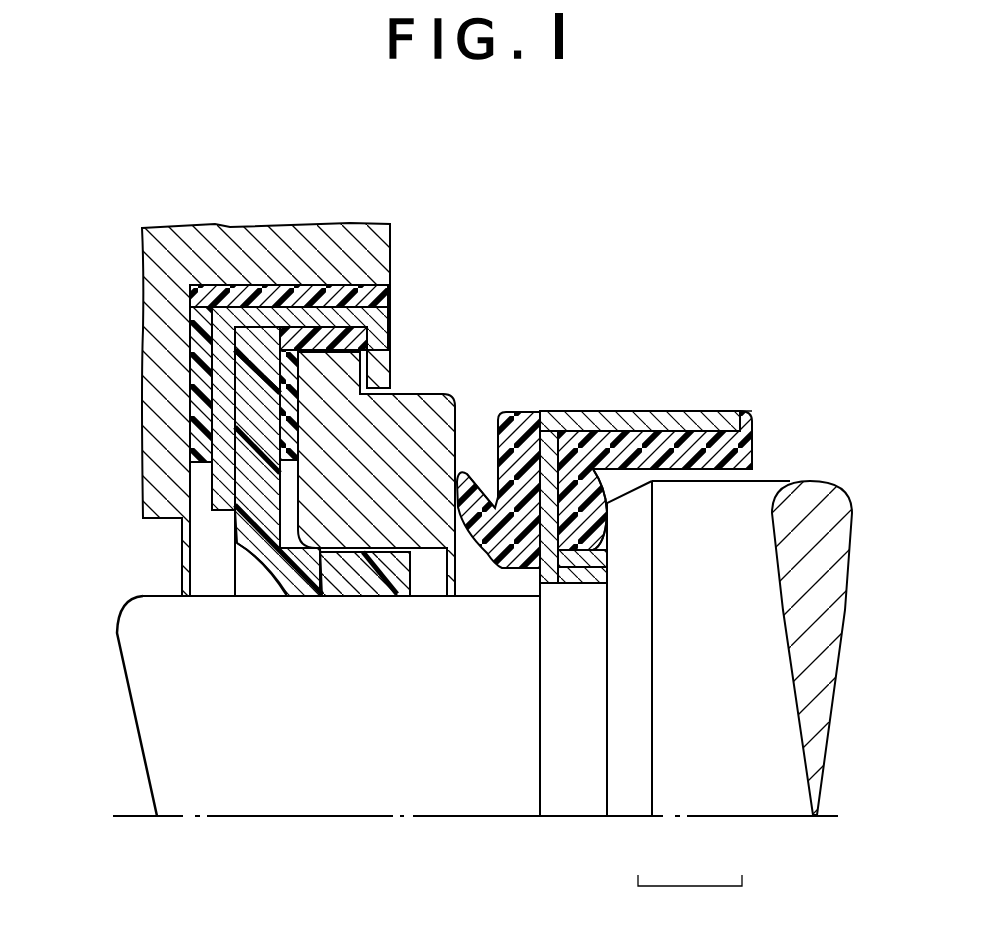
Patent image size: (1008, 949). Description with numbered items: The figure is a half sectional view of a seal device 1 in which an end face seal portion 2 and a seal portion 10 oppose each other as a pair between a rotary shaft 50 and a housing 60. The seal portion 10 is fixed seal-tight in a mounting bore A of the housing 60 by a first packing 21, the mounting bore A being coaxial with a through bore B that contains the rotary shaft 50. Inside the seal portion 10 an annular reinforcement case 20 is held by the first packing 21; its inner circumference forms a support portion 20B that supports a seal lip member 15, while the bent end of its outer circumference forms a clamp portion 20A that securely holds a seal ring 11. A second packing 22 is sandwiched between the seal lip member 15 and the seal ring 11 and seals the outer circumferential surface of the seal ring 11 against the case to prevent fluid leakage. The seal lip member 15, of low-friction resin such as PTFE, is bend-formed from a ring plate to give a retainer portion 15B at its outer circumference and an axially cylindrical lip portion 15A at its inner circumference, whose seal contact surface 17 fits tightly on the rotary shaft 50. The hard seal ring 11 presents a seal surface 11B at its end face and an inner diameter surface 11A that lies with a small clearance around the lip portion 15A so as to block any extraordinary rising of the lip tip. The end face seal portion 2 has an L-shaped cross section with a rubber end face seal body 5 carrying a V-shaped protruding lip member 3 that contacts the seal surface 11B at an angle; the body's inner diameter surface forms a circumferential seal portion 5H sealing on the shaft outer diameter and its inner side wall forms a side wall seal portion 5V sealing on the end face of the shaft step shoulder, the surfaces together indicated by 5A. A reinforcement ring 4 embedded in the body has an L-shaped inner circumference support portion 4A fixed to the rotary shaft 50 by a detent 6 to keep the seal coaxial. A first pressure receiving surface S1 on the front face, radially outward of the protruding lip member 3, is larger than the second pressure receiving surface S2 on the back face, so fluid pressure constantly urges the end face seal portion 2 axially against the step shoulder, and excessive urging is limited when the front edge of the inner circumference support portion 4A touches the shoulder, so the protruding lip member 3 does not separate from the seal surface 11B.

The seal device 1 is at (615, 328).
The end face seal portion 2 is at (763, 430).
The protruding lip member 3 is at (468, 470).
The reinforcement ring 4 is at (615, 420).
The inner circumference support portion 4A is at (567, 583).
The end face seal body 5 is at (742, 413).
The ring surface 5A is at (690, 897).
The circumferential seal portion 5H is at (700, 478).
The side wall seal portion 5V is at (600, 530).
The detent 6 is at (595, 548).
The seal portion 10 is at (440, 290).
The seal ring 11 is at (375, 597).
The inner diameter surface 11A is at (313, 598).
The seal surface 11B is at (458, 455).
The seal lip member 15 is at (250, 453).
The lip portion 15A is at (393, 597).
The retainer portion 15B is at (257, 390).
The seal contact surface 17 is at (348, 597).
The reinforcement case 20 is at (282, 315).
The clamp portion 20A is at (392, 345).
The support portion 20B is at (222, 478).
The first packing 21 is at (240, 287).
The second packing 22 is at (320, 337).
The rotary shaft 50 is at (820, 670).
The housing 60 is at (170, 318).
The mounting bore A is at (207, 596).
The through bore B is at (167, 565).
The first pressure receiving surface S1 is at (484, 445).
The second pressure receiving surface S2 is at (753, 453).